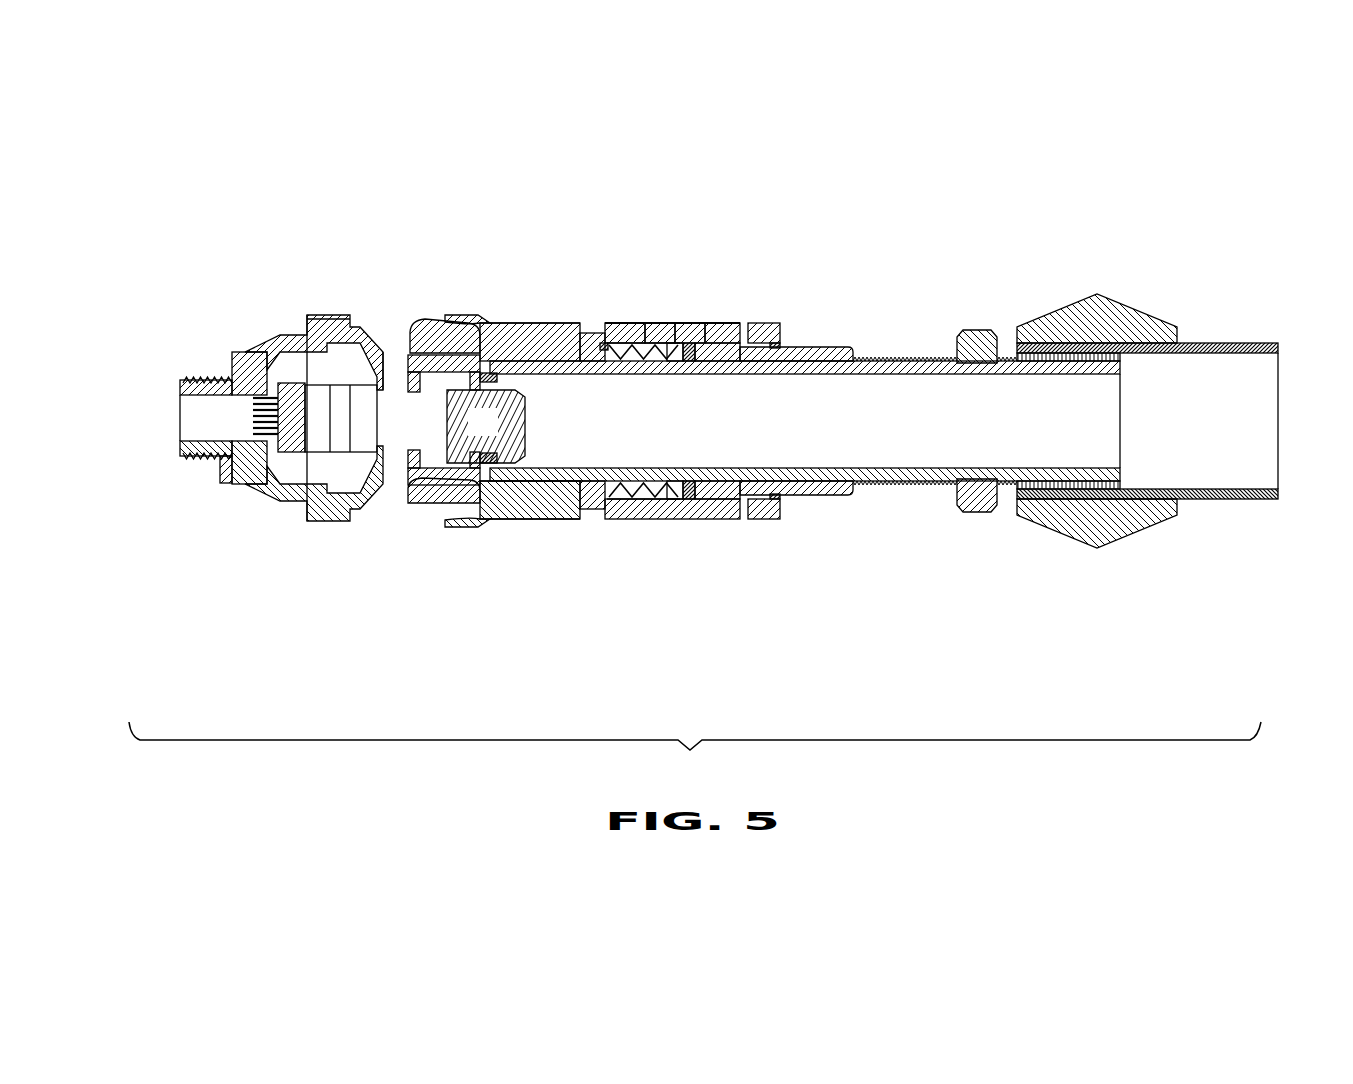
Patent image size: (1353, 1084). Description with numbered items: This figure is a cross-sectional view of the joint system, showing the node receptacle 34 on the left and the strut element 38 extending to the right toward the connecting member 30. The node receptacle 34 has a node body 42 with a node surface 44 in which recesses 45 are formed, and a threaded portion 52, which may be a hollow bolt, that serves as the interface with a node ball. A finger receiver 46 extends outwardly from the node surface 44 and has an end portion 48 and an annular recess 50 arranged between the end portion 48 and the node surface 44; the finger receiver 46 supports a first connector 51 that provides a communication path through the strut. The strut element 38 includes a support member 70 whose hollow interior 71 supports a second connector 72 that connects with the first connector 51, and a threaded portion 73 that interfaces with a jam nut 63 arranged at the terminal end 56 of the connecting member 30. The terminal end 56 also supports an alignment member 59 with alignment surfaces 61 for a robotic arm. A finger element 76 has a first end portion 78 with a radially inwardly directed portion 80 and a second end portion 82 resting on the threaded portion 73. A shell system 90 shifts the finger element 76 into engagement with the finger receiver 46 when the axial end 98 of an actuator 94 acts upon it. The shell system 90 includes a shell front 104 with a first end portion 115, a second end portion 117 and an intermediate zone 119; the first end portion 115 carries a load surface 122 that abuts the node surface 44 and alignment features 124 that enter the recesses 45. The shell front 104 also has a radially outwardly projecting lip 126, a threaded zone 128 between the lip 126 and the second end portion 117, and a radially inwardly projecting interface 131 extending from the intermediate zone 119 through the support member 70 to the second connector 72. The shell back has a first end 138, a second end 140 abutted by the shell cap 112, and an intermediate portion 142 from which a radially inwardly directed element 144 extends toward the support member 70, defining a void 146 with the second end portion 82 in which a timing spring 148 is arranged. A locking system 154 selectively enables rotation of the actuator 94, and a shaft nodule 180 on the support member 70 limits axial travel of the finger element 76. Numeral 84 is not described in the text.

The connecting member 30 is at (1205, 500).
The node receptacle 34 is at (253, 410).
The strut element 38 is at (474, 402).
The node body 42 is at (240, 496).
The node surface 44 is at (347, 512).
The recess 45 is at (360, 313).
The finger receiver 46 is at (420, 411).
The end portion 48 is at (365, 340).
The annular recess 50 is at (380, 340).
The first connector 51 is at (320, 417).
The threaded portion 52 is at (192, 375).
The terminal end 56 is at (1120, 439).
The alignment member 59 is at (1050, 527).
The alignment surfaces 61 is at (1120, 302).
The jam nut 63 is at (972, 330).
The support member 70 is at (899, 510).
The hollow interior 71 is at (687, 497).
The second connector 72 is at (496, 434).
The threaded portion 73 is at (888, 360).
The finger element 76 is at (490, 378).
The first end portion 78 is at (398, 340).
The radially inwardly directed portion 80 is at (412, 337).
The second end portion 82 is at (593, 373).
The retainer 84 is at (577, 480).
The shell system 90 is at (687, 552).
The actuator 94 is at (812, 509).
The axial end 98 is at (743, 518).
The shell front 104 is at (537, 493).
The shell cap 112 is at (722, 323).
The first end portion 115 is at (463, 330).
The second end portion 117 is at (530, 335).
The intermediate zone 119 is at (635, 323).
The load surface 122 is at (413, 500).
The alignment feature 124 is at (423, 323).
The radially outwardly projecting lip 126 is at (550, 333).
The threaded zone 128 is at (558, 508).
The radially inwardly projecting interface 131 is at (490, 457).
The first end 138 is at (565, 333).
The second end 140 is at (707, 323).
The intermediate portion 142 is at (660, 323).
The radially inwardly directed element 144 is at (677, 510).
The void 146 is at (625, 487).
The spring 148 is at (627, 323).
The locking system 154 is at (705, 398).
The shaft nodule 180 is at (517, 493).